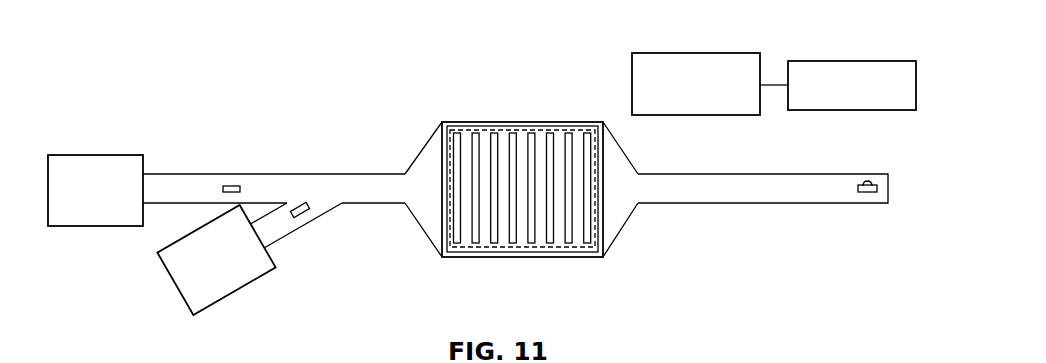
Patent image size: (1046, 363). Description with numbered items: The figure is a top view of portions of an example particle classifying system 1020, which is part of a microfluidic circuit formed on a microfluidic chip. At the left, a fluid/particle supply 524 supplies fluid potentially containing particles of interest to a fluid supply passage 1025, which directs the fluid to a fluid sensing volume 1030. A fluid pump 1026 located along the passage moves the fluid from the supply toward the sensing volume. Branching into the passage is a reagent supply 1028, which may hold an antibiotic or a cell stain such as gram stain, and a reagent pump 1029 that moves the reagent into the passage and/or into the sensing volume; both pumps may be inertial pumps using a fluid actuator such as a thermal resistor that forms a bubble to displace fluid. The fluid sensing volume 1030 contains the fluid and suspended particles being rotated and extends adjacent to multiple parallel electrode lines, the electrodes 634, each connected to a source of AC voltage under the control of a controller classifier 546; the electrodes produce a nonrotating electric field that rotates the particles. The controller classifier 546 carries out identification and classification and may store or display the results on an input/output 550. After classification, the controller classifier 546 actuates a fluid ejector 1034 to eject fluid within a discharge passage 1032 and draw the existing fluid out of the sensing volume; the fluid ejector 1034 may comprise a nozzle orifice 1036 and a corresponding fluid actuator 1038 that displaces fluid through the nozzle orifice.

The fluid/particle supply 524 is at (108, 155).
The particle classifying system 1020 is at (241, 115).
The fluid supply passage 1025 is at (276, 174).
The fluid pump 1026 is at (233, 186).
The reagent supply 1028 is at (237, 291).
The reagent pump 1029 is at (302, 218).
The fluid sensing volume 1030 is at (423, 150).
The electrodes 634 is at (550, 240).
The discharge passage 1032 is at (725, 205).
The fluid ejector 1034 is at (867, 208).
The nozzle orifice 1036 is at (868, 181).
The fluid actuator 1038 is at (877, 189).
The controller classifier 546 is at (692, 53).
The input/output 550 is at (842, 61).